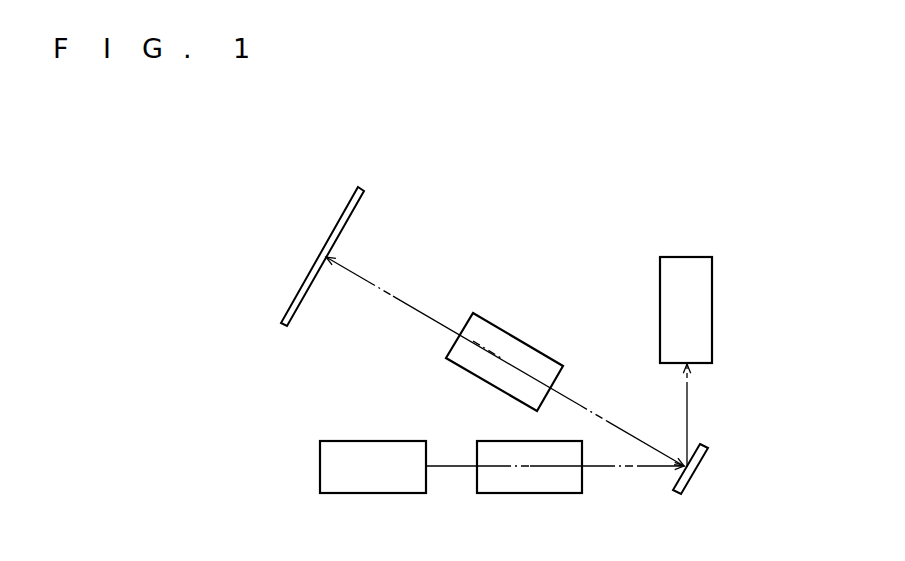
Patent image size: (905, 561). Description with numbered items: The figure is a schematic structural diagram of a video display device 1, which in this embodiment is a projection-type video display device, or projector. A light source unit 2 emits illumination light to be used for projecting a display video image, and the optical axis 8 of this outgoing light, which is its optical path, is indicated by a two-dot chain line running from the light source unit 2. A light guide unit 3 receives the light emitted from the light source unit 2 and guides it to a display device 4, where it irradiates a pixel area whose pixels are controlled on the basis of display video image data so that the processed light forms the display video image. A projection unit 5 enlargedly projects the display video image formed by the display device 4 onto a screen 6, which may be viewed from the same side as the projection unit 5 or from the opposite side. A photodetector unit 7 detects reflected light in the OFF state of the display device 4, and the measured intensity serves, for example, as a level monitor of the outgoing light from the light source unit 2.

The video display device 1 is at (743, 220).
The light source unit 2 is at (370, 493).
The light guide unit 3 is at (530, 493).
The display device 4 is at (711, 459).
The projection unit 5 is at (446, 358).
The screen 6 is at (292, 298).
The photodetector unit 7 is at (713, 308).
The optical axis 8 is at (453, 467).